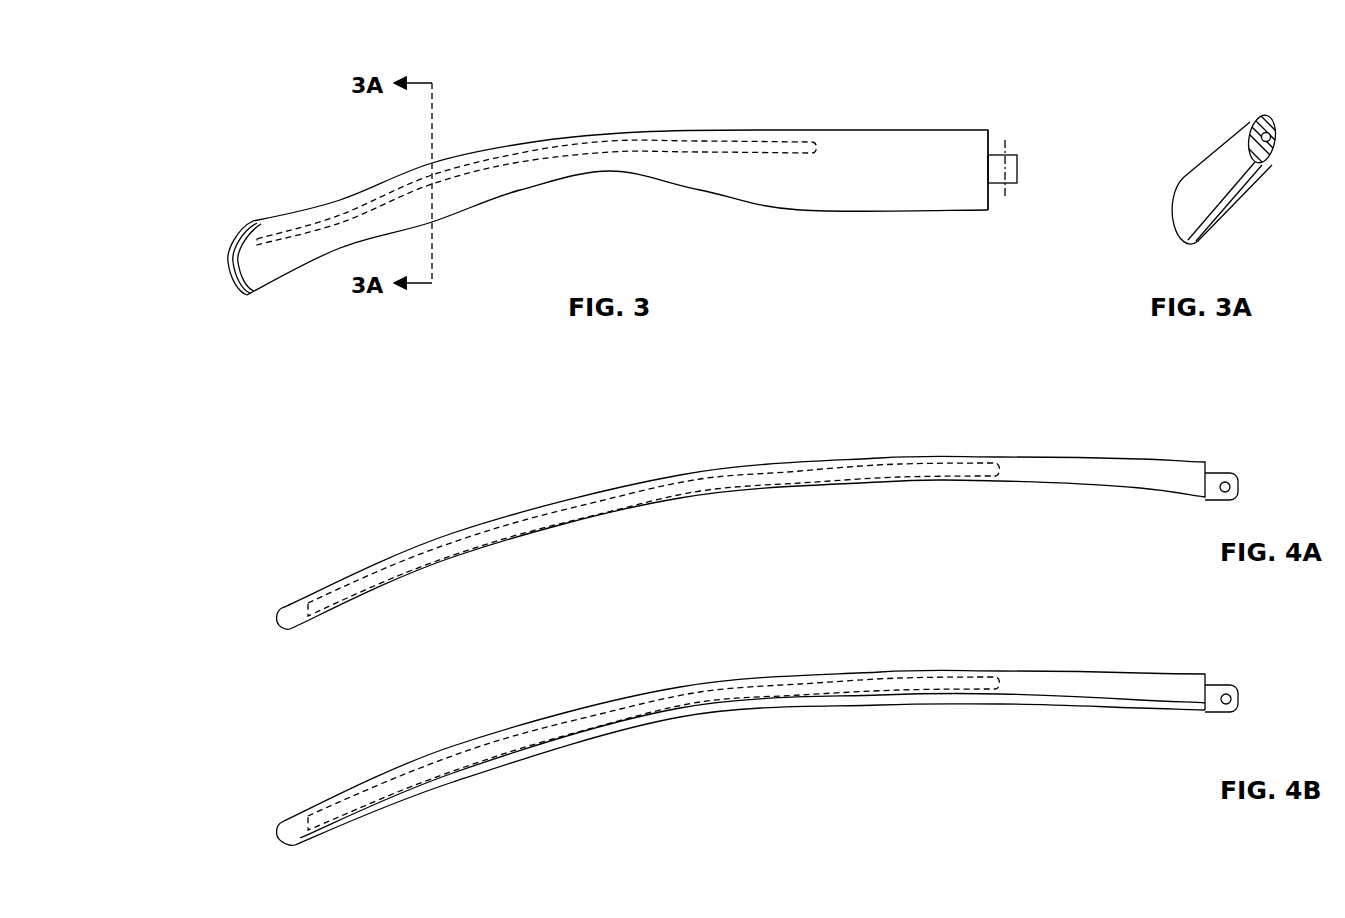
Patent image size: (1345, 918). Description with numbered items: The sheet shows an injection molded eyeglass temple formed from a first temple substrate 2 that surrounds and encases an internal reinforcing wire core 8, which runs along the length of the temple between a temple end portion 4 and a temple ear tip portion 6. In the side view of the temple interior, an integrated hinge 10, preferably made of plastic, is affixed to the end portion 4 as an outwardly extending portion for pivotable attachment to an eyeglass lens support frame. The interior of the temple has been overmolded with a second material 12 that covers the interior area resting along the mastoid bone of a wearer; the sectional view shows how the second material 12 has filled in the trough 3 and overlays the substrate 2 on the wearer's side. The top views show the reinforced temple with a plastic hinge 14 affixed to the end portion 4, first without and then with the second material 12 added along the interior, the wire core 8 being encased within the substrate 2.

In FIG. 3, the first temple substrate 2 is at (228, 258).
In FIG. 4A, the first temple substrate 2 is at (1078, 468).
In FIG. 4B, the first temple substrate 2 is at (1113, 680).
In FIG. 3A, the trough 3 is at (1273, 153).
In FIG. 3, the temple end portion 4 is at (988, 195).
In FIG. 3, the temple ear tip portion 6 is at (226, 291).
In FIG. 4A, the temple ear tip portion 6 is at (277, 618).
In FIG. 4B, the temple ear tip portion 6 is at (277, 833).
In FIG. 3, the internal reinforcing wire core 8 is at (702, 148).
In FIG. 3A, the internal reinforcing wire core 8 is at (1272, 137).
In FIG. 4A, the internal reinforcing wire core 8 is at (678, 475).
In FIG. 4B, the internal reinforcing wire core 8 is at (673, 695).
In FIG. 3, the integrated hinge 10 is at (1017, 168).
In FIG. 3, the second material 12 is at (858, 140).
In FIG. 3A, the second material 12 is at (1232, 150).
In FIG. 4B, the second material 12 is at (657, 715).
In FIG. 4A, the plastic hinge 14 is at (1227, 473).
In FIG. 4B, the plastic hinge 14 is at (1226, 686).